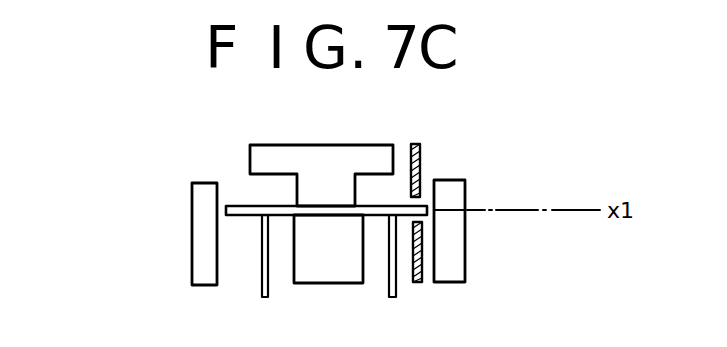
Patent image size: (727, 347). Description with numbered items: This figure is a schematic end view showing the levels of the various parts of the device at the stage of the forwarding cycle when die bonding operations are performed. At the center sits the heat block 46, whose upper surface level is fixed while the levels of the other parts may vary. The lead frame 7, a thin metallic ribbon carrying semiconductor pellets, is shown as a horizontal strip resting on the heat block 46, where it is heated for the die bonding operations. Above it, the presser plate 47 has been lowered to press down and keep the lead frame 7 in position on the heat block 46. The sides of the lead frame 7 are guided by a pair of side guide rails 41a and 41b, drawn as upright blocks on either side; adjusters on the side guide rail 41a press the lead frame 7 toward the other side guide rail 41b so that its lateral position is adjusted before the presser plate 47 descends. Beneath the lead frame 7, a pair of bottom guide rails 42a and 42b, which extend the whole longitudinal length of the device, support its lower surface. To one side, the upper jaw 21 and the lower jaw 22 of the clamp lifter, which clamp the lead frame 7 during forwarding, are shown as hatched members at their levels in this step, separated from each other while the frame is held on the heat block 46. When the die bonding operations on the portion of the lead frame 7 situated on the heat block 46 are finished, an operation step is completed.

The lead frame 7 is at (243, 206).
The presser plate 47 is at (375, 145).
The upper jaw 21 is at (421, 160).
The lower jaw 22 is at (419, 283).
The side guide rail 41a is at (192, 212).
The side guide rail 41b is at (465, 196).
The bottom guide rail 42a is at (262, 291).
The bottom guide rail 42b is at (392, 297).
The heat block 46 is at (317, 283).